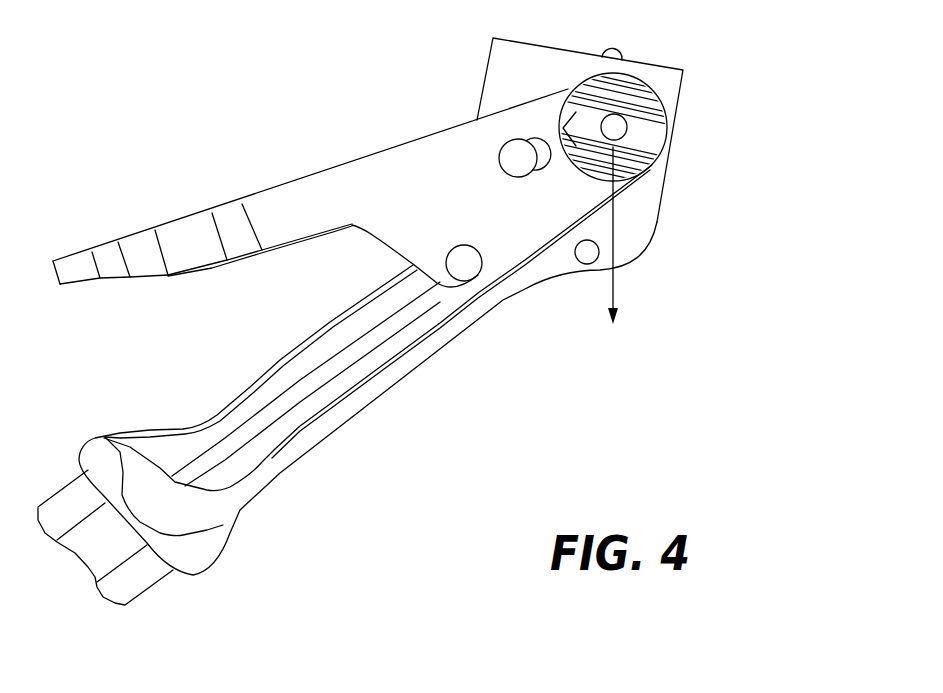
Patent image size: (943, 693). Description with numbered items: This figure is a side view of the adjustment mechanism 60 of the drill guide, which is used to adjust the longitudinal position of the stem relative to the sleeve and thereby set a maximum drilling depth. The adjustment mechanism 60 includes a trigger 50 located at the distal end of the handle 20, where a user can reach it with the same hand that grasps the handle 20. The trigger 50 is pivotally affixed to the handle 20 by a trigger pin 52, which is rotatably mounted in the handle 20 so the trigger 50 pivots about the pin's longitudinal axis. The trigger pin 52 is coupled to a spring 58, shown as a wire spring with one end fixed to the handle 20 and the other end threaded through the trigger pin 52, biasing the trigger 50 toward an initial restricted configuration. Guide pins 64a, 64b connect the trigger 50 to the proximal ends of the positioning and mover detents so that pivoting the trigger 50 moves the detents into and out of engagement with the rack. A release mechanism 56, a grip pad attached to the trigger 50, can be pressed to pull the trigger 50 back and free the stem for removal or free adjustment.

The adjustment mechanism 60 is at (266, 111).
The trigger 50 is at (368, 198).
The trigger pin 52 is at (467, 265).
The spring 58 is at (358, 340).
The handle 20 is at (192, 553).
The release mechanism 56 is at (663, 111).
The guide pin 64a is at (617, 130).
The guide pin 64b is at (525, 155).